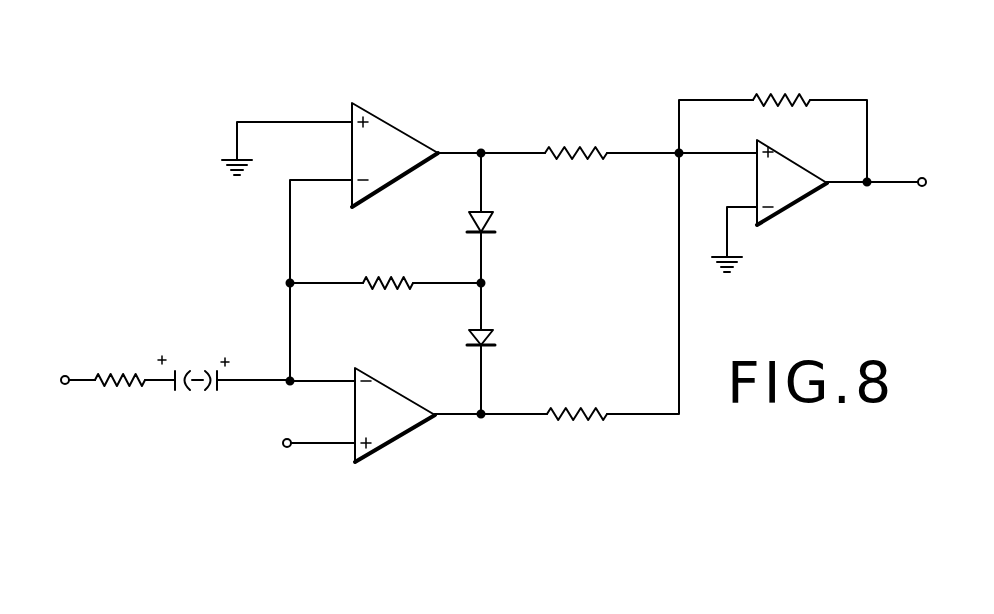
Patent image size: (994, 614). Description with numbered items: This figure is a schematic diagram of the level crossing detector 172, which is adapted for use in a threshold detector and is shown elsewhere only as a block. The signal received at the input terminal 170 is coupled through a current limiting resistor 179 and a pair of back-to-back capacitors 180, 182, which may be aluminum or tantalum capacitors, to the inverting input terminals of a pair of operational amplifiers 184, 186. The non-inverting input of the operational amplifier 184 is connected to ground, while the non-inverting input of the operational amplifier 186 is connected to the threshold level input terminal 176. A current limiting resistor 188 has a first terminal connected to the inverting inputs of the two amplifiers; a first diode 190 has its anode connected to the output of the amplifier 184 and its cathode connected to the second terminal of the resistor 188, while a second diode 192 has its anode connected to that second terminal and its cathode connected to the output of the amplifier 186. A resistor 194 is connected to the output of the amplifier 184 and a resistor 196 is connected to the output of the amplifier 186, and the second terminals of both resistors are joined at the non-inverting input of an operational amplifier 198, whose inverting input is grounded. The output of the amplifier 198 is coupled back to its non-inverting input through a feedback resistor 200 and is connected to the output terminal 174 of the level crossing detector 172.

The input terminal 170 is at (63, 377).
The level crossing detector 172 is at (521, 122).
The output terminal 174 is at (921, 187).
The threshold level input terminal 176 is at (283, 445).
The current limiting resistor 179 is at (100, 377).
The capacitor 180 is at (173, 385).
The capacitor 182 is at (218, 387).
The operational amplifier 184 is at (388, 122).
The operational amplifier 186 is at (393, 442).
The current limiting resistor 188 is at (375, 290).
The first diode 190 is at (494, 222).
The second diode 192 is at (494, 340).
The resistor 194 is at (576, 147).
The resistor 196 is at (563, 422).
The operational amplifier 198 is at (783, 213).
The feedback resistor 200 is at (770, 95).